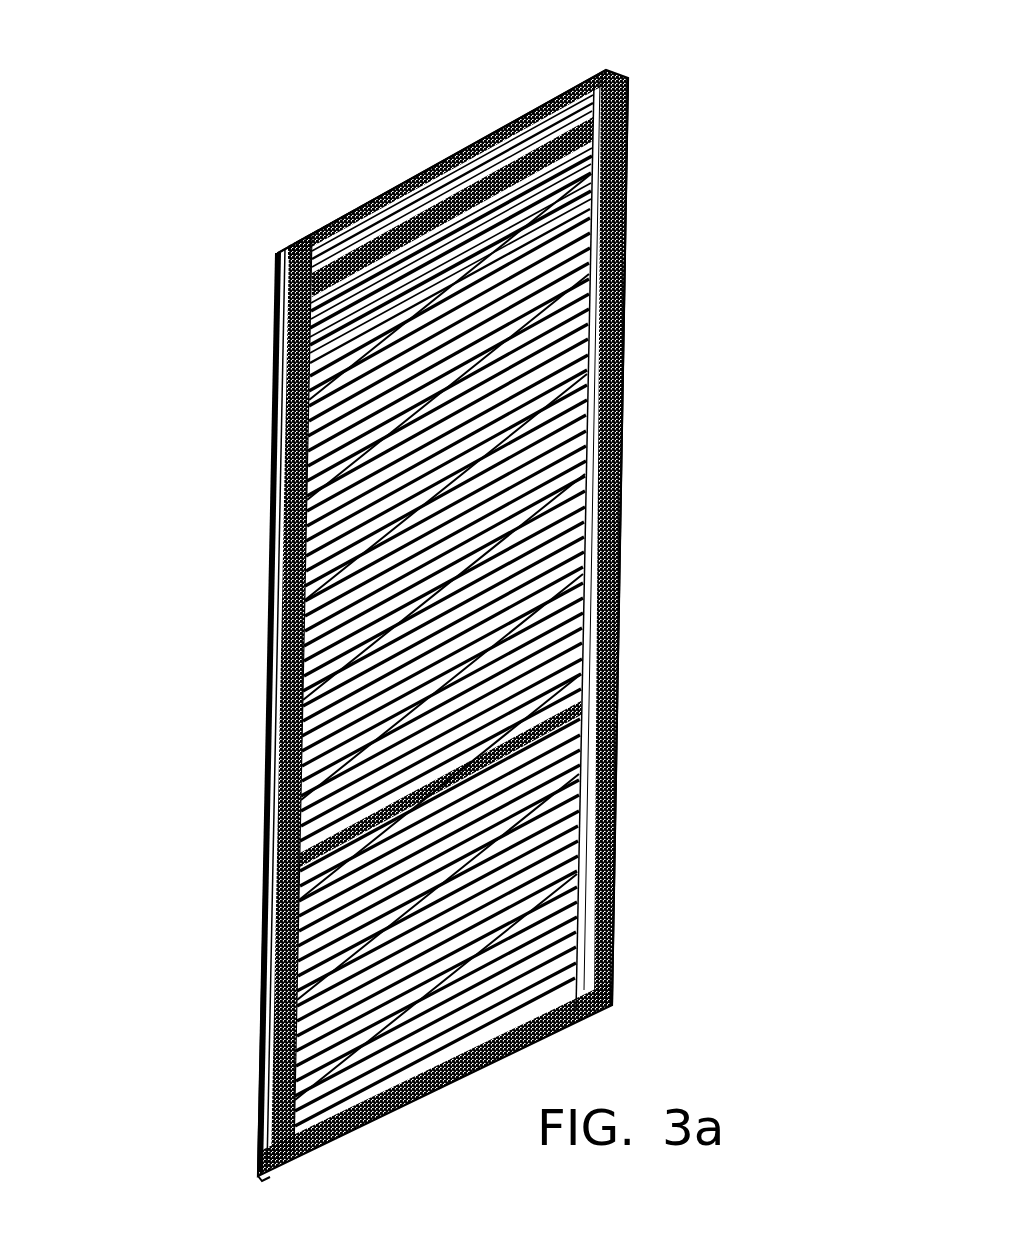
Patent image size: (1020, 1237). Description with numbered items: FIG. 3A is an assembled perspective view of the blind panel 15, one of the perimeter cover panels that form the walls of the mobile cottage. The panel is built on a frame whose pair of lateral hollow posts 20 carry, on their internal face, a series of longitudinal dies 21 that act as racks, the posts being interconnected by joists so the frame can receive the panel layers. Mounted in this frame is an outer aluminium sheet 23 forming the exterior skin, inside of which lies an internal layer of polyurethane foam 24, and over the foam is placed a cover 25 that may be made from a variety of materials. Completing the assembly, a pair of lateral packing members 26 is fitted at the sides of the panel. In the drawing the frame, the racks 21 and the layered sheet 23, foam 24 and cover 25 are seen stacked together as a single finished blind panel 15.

The blind panel 15 is at (648, 407).
The lateral hollow posts 20 is at (300, 240).
The longitudinal dies 21 is at (270, 600).
The outer aluminium sheet 23 is at (560, 86).
The polyurethane foam layer 24 is at (628, 150).
The cover 25 is at (623, 522).
The lateral packing members 26 is at (272, 465).